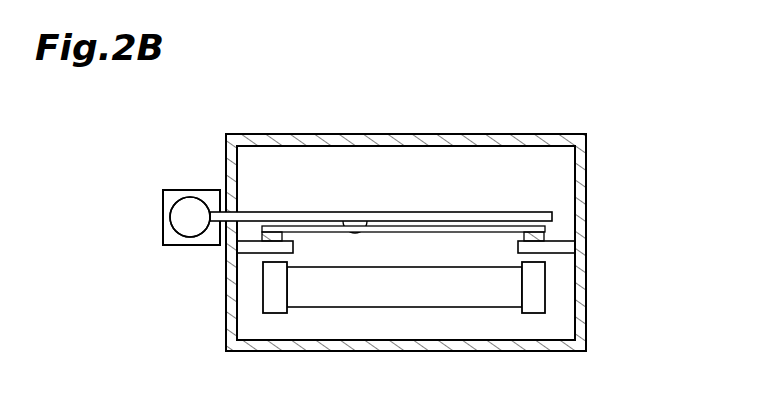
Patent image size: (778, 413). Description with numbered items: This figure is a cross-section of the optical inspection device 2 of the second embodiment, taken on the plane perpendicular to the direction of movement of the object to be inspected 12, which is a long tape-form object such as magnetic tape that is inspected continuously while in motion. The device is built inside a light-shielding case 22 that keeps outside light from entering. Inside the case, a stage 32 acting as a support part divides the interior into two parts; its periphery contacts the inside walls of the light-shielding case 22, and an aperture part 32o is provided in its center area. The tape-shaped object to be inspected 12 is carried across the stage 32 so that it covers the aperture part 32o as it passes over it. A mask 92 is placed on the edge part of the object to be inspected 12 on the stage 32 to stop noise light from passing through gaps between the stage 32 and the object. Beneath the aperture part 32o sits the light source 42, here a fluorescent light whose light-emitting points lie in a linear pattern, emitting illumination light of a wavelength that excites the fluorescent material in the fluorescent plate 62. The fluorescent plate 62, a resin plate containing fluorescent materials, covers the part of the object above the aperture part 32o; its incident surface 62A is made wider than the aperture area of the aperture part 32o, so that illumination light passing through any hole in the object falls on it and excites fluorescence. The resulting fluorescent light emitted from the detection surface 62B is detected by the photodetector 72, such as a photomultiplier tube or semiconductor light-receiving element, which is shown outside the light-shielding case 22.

The optical inspection device 2 is at (568, 69).
The light-shielding case 22 is at (394, 134).
The photodetector 72 is at (182, 200).
The fluorescent plate 62 is at (552, 213).
The detection surface 62B is at (210, 212).
The incident surface 62A is at (369, 222).
The object to be inspected 12 is at (515, 228).
The mask 92 is at (270, 236).
The stage 32 is at (257, 256).
The aperture part 32o is at (327, 254).
The light source 42 is at (397, 308).